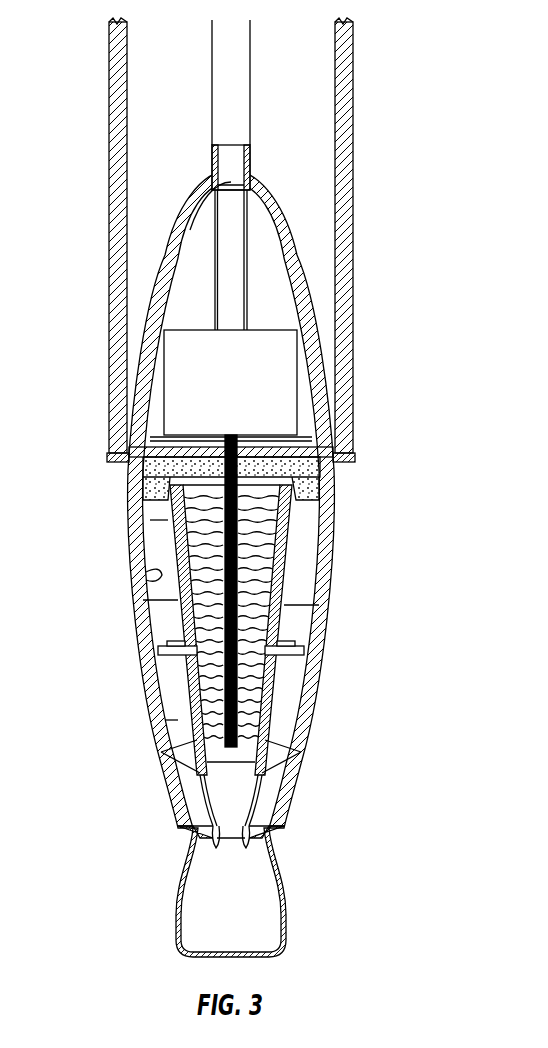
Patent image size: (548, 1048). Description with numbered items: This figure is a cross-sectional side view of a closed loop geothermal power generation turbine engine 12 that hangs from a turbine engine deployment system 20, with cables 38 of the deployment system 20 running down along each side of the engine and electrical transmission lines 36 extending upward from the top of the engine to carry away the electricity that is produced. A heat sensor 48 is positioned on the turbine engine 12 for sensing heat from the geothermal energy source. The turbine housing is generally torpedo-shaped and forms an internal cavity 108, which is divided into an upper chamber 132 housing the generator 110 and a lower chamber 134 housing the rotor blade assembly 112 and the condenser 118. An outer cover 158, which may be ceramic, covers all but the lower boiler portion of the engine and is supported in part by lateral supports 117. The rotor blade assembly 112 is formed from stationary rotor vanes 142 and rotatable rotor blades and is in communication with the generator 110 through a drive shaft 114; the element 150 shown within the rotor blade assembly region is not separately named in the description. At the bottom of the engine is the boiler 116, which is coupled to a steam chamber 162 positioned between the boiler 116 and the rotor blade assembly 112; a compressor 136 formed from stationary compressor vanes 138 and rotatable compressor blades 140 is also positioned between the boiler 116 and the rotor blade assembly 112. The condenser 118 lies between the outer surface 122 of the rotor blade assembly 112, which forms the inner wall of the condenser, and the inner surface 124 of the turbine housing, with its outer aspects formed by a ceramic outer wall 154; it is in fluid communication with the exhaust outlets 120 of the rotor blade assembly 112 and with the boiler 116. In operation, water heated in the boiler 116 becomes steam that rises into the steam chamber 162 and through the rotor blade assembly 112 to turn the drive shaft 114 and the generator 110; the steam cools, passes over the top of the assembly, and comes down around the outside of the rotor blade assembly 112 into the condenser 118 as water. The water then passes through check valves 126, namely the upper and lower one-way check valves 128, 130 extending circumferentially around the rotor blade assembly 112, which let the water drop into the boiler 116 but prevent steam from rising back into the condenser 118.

The turbine engine 12 is at (350, 587).
The turbine engine deployment system 20 is at (358, 108).
The electrical transmission line 36 is at (246, 250).
The cable 38 is at (109, 194).
The heat sensor 48 is at (208, 838).
The internal cavity 108 is at (143, 502).
The generator 110 is at (283, 362).
The rotor blade assembly 112 is at (178, 600).
The drive shaft 114 is at (212, 670).
The boiler 116 is at (250, 922).
The lateral support 117 is at (314, 698).
The condenser 118 is at (127, 490).
The exhaust outlet 120 is at (190, 485).
The outer surface of the rotor blade assembly 122 is at (268, 570).
The inner surface of the turbine housing 124 is at (255, 538).
The check valve 126 is at (163, 764).
The upper check valve 128 is at (200, 744).
The lower check valve 130 is at (178, 796).
The upper chamber 132 is at (195, 278).
The lower chamber 134 is at (160, 528).
The compressor 136 is at (208, 702).
The stationary compressor vane 138 is at (216, 690).
The rotatable compressor blade 140 is at (191, 716).
The stationary rotor vane 142 is at (240, 512).
The heating coil 150 is at (250, 530).
The ceramic outer wall 154 is at (150, 576).
The outer cover 158 is at (158, 648).
The steam chamber 162 is at (243, 790).